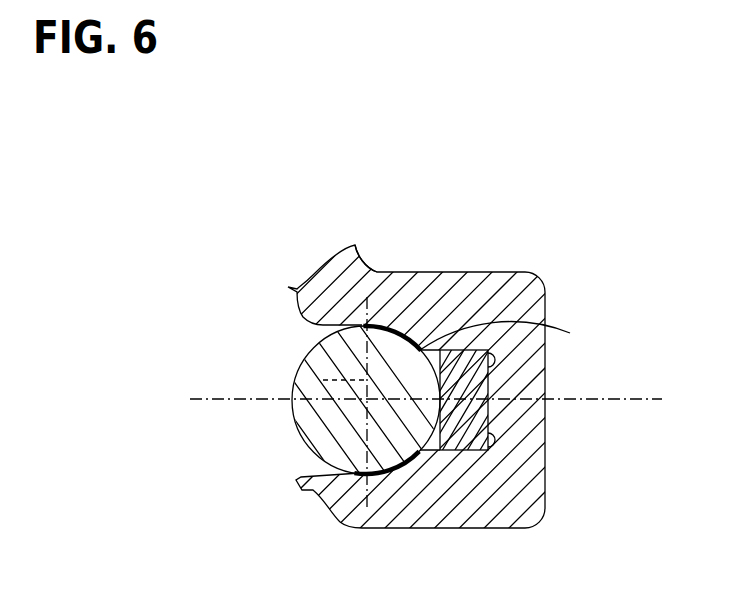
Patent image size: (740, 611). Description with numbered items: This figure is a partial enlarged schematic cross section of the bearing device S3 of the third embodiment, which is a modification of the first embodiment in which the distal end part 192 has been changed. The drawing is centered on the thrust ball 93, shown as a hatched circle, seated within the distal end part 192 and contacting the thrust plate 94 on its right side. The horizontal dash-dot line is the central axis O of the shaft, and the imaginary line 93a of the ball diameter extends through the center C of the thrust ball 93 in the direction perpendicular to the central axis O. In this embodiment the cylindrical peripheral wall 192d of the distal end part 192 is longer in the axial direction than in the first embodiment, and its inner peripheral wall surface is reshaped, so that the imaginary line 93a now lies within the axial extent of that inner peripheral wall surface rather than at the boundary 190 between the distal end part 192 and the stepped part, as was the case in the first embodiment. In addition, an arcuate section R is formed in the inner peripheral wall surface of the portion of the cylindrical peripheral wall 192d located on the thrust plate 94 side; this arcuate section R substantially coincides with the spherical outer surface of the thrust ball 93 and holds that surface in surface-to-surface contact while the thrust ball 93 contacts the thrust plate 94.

The bearing device S3 is at (432, 77).
The distal end part 192 is at (500, 265).
The cylindrical peripheral wall 192d is at (427, 292).
The boundary 190 is at (297, 478).
The thrust ball 93 is at (397, 435).
The imaginary line 93a is at (298, 358).
The thrust plate 94 is at (475, 435).
The arcuate section R is at (565, 331).
The central axis O is at (645, 397).
The center C is at (366, 400).